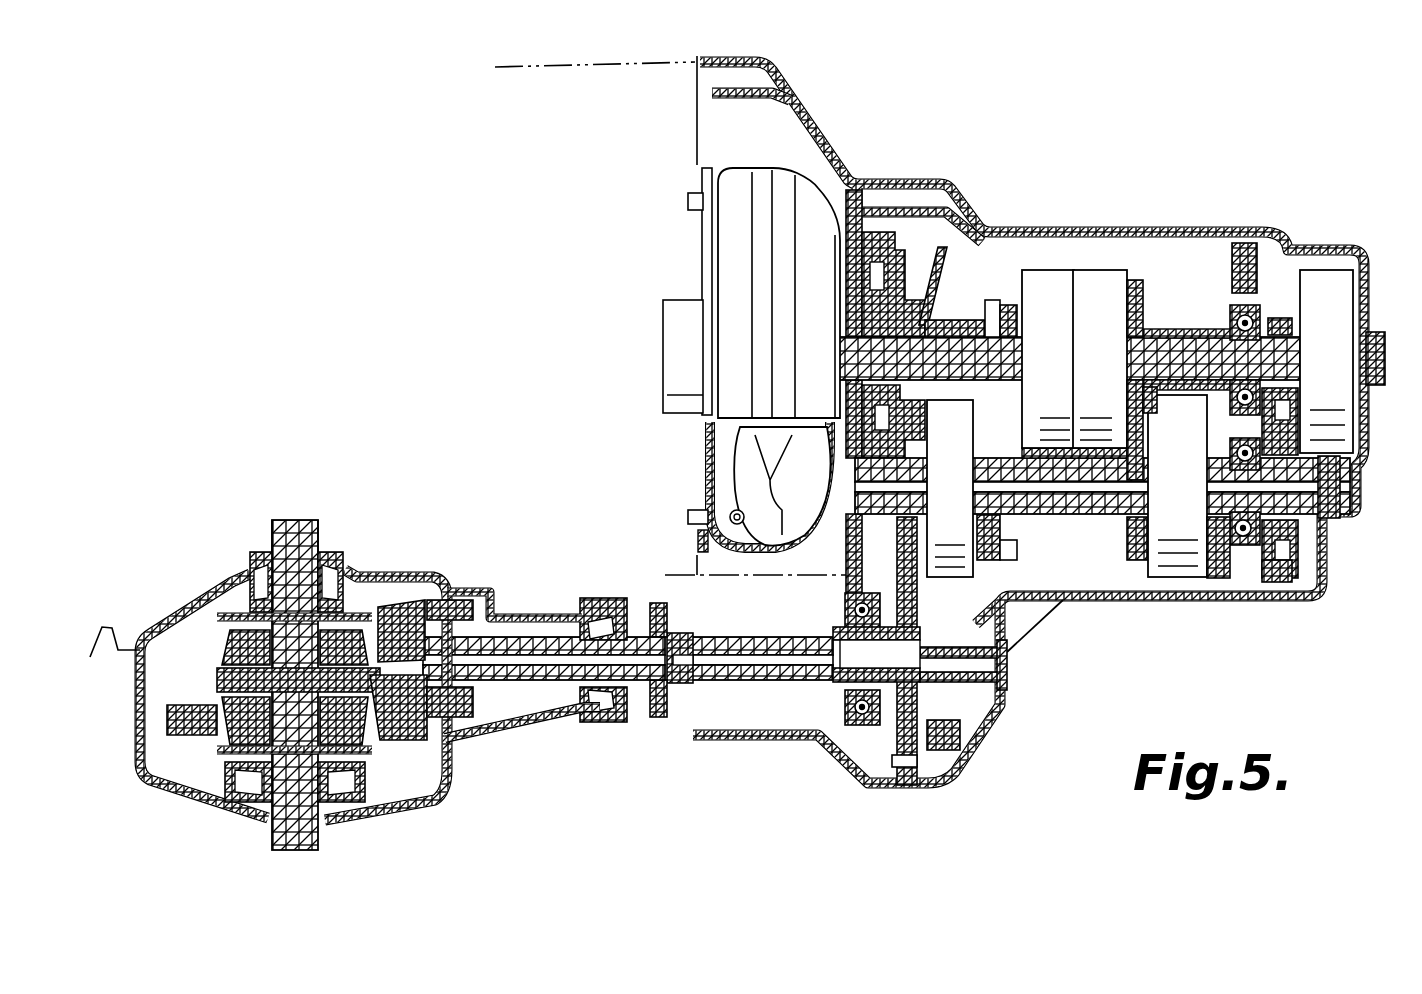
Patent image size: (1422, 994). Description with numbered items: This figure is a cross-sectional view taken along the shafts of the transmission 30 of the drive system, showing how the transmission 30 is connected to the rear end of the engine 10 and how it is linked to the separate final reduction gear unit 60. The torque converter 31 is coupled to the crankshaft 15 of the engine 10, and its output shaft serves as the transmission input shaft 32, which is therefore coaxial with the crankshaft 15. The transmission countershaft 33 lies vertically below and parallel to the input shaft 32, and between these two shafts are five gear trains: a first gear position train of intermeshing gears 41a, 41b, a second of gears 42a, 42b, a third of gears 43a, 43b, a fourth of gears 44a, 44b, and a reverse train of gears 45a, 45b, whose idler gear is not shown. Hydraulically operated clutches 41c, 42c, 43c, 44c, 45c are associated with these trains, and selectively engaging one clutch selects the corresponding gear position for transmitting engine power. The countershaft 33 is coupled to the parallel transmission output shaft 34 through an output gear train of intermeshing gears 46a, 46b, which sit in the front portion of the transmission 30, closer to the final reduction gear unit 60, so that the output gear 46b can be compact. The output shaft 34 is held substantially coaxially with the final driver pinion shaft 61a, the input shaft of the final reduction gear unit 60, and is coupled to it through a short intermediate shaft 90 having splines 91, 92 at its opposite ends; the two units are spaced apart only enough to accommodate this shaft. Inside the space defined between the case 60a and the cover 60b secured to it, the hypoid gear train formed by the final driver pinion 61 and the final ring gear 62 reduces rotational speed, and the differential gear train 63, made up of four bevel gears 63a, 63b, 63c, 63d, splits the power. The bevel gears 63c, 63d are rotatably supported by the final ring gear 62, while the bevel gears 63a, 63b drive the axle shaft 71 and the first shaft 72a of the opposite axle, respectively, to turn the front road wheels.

The engine 10 is at (600, 62).
The crankshaft 15 is at (670, 300).
The transmission 30 is at (1119, 205).
The torque converter 31 is at (745, 185).
The transmission input shaft 32 is at (1177, 340).
The transmission countershaft 33 is at (1102, 524).
The transmission output shaft 34 is at (962, 690).
The first gear position gear 41a is at (1274, 330).
The first gear position gear 41b is at (1270, 582).
The hydraulically operated clutch 41c is at (1340, 302).
The second gear position gear 42a is at (1010, 305).
The second gear position gear 42b is at (1017, 560).
The hydraulically operated clutch 42c is at (1047, 280).
The third gear position gear 43a is at (983, 300).
The third gear position gear 43b is at (987, 557).
The hydraulically operated clutch 43c is at (945, 562).
The fourth gear position gear 44a is at (1140, 292).
The fourth gear position gear 44b is at (1085, 505).
The hydraulically operated clutch 44c is at (1105, 280).
The reverse gear position gear 45a is at (1222, 320).
The reverse gear position gear 45b is at (1217, 570).
The hydraulically operated clutch 45c is at (1178, 580).
The output gear 46a is at (848, 540).
The output gear 46b is at (906, 770).
The final reduction gear unit 60 is at (192, 572).
The case 60a is at (135, 732).
The cover 60b is at (200, 790).
The final driver pinion 61 is at (400, 612).
The final driver pinion shaft 61a is at (508, 638).
The final ring gear 62 is at (417, 740).
The differential gear train 63 is at (215, 656).
The bevel gear 63a is at (240, 641).
The bevel gear 63b is at (215, 765).
The bevel gear 63c is at (225, 700).
The bevel gear 63d is at (368, 748).
The axle shaft 71 is at (274, 834).
The first shaft 72a is at (312, 540).
The intermediate shaft 90 is at (740, 640).
The spline 91 is at (815, 686).
The spline 92 is at (672, 685).